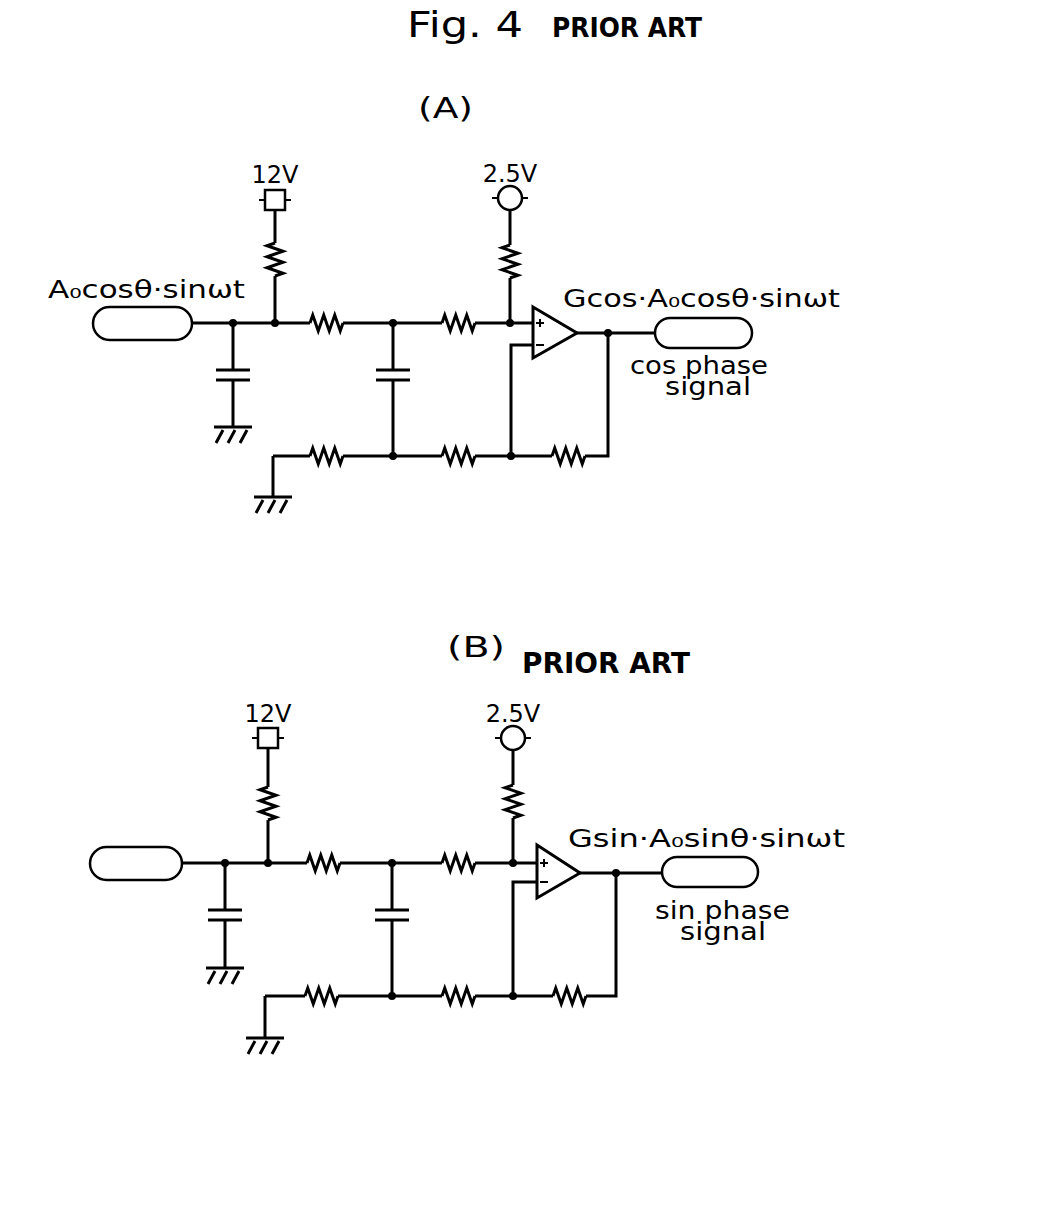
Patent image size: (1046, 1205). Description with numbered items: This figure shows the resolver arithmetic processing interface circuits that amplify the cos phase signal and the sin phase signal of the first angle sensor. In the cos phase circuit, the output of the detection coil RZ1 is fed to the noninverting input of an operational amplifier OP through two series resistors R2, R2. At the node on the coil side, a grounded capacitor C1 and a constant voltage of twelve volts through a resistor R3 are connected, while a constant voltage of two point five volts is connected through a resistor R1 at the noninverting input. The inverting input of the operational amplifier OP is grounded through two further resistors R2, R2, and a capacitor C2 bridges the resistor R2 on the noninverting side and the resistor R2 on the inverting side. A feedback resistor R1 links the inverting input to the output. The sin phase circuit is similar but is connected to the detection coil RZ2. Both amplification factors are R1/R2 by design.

The detection coil RZ1 is at (142, 323).
The detection coil RZ2 is at (136, 863).
The resistor R1 is at (544, 647).
The resistor R2 is at (387, 663).
The resistor R3 is at (291, 531).
The capacitor C1 is at (247, 653).
The capacitor C2 is at (410, 653).
The operational amplifier OP is at (557, 621).